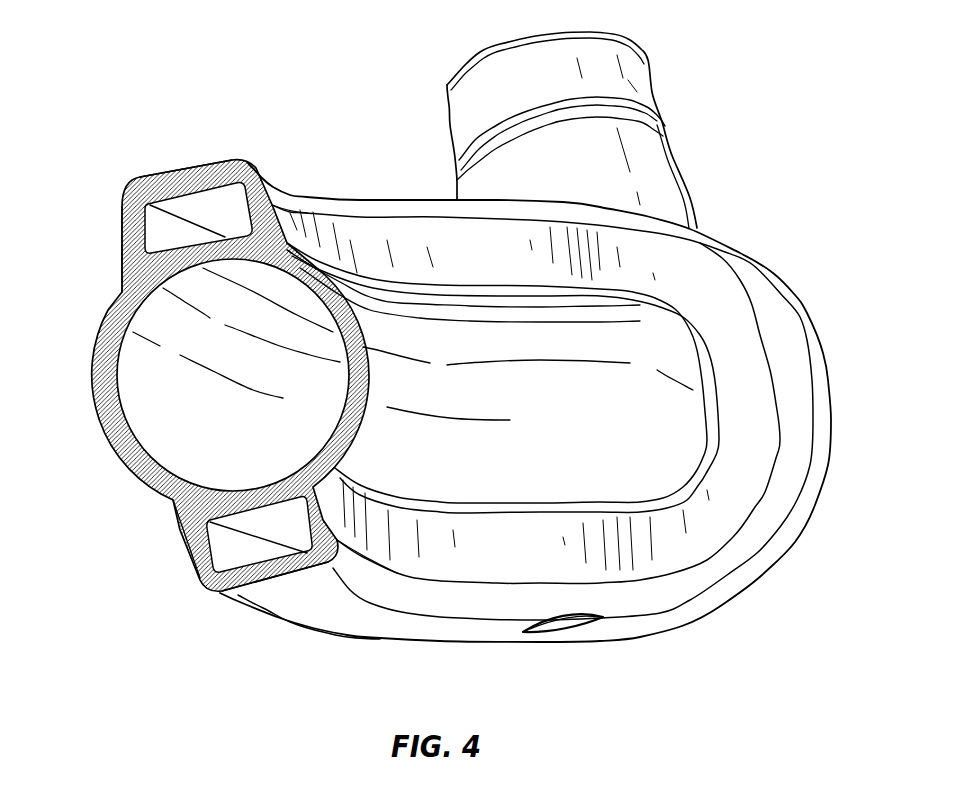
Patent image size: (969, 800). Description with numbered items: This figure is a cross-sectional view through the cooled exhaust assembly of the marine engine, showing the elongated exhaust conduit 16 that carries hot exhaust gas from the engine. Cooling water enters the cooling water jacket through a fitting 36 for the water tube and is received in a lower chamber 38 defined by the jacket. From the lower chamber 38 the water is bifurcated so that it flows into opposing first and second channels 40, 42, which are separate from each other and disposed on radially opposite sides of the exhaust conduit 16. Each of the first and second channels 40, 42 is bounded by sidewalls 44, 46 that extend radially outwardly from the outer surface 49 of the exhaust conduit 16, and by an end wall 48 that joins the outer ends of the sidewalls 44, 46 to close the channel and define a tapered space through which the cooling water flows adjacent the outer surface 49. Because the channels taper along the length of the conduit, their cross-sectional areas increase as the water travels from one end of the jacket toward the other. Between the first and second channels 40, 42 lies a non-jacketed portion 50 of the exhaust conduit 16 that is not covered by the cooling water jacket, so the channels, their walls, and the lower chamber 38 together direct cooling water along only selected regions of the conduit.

The exhaust conduit 16 is at (92, 385).
The fitting 36 is at (634, 72).
The lower chamber 38 is at (740, 340).
The first channel 40 is at (274, 540).
The second channel 42 is at (214, 203).
The sidewall 44 is at (273, 207).
The sidewall 46 is at (131, 231).
The end wall 48 is at (158, 171).
The outer surface 49 is at (193, 250).
The non-jacketed portion 50 is at (647, 425).